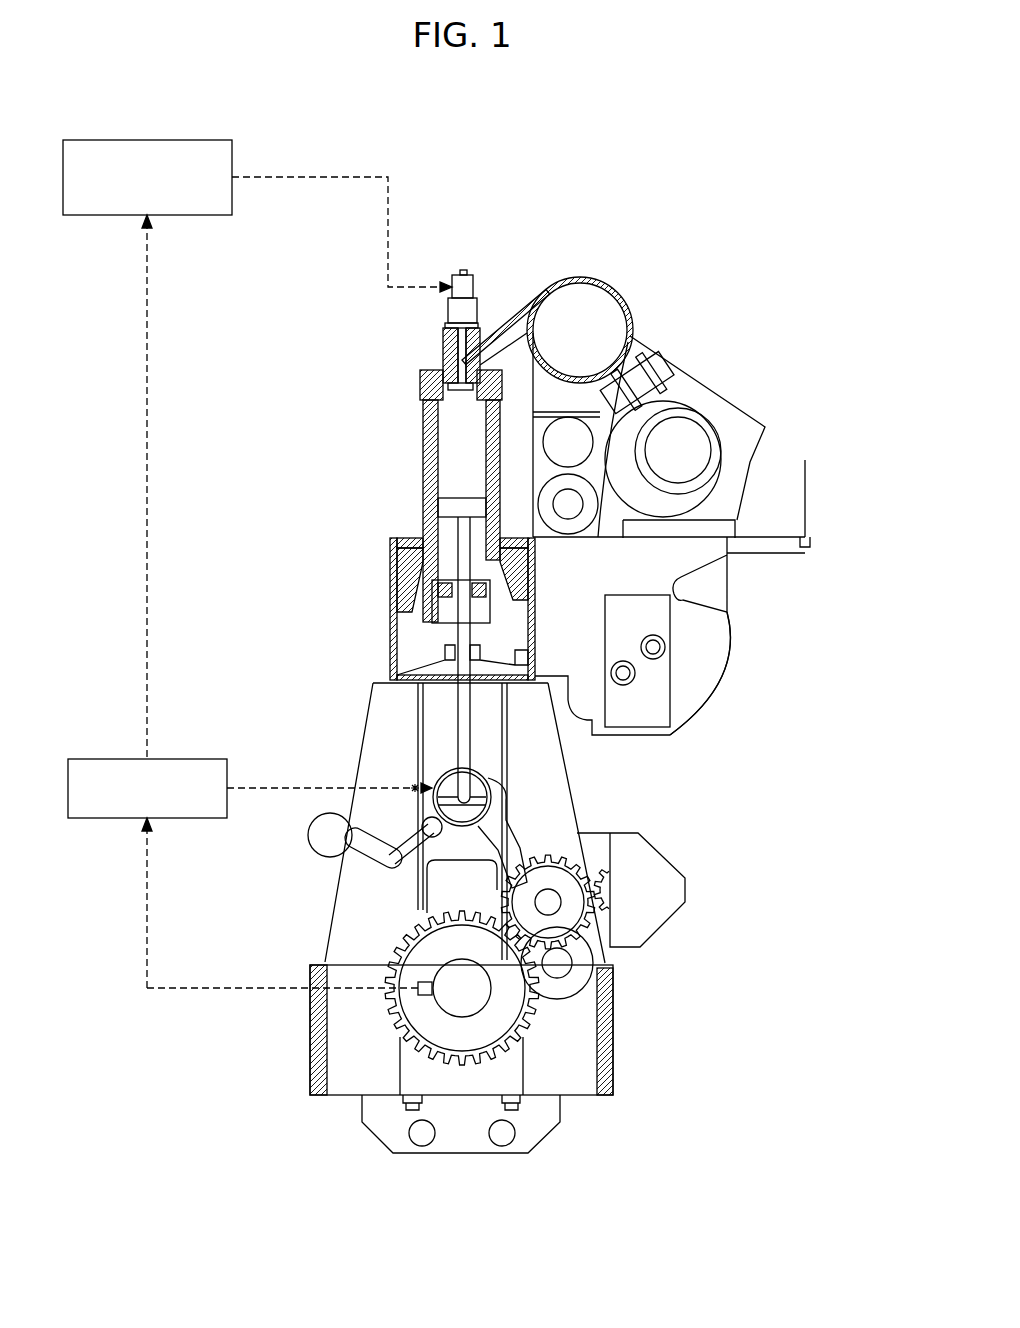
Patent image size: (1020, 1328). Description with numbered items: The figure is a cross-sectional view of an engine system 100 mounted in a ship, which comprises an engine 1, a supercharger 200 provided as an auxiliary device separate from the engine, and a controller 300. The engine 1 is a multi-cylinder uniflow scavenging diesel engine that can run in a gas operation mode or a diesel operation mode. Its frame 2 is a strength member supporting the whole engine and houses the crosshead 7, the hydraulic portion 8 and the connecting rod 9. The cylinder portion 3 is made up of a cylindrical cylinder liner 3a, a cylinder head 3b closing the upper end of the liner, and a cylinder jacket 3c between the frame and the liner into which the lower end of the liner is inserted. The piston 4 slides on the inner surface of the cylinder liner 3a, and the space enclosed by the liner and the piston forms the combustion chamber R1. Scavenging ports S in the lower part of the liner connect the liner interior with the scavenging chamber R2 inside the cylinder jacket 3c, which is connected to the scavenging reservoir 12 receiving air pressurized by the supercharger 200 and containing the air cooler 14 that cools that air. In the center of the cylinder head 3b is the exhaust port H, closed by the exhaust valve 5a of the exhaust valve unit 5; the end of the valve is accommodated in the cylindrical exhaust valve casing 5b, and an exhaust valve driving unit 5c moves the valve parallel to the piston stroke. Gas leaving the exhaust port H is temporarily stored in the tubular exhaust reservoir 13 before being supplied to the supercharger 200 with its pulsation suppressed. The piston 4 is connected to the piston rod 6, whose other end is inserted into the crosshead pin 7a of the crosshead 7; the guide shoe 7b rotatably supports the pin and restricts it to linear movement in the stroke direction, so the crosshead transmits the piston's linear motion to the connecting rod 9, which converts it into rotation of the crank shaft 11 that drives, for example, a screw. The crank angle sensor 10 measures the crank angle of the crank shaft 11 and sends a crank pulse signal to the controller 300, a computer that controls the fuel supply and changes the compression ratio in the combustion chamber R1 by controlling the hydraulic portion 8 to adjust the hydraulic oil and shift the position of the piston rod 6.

The engine system 100 is at (746, 168).
The engine 1 is at (372, 325).
The frame 2 is at (372, 692).
The cylinder portion 3 is at (398, 431).
The cylinder liner 3a is at (427, 465).
The cylinder head 3b is at (420, 388).
The cylinder jacket 3c is at (400, 602).
The piston 4 is at (440, 507).
The exhaust valve unit 5 is at (475, 291).
The exhaust valve 5a is at (470, 382).
The exhaust valve casing 5b is at (450, 282).
The exhaust valve driving unit 5c is at (99, 140).
The piston rod 6 is at (482, 746).
The crosshead 7 is at (376, 765).
The crosshead pin 7a is at (448, 765).
The guide shoe 7b is at (427, 806).
The hydraulic portion 8 is at (451, 812).
The connecting rod 9 is at (488, 825).
The crank angle sensor 10 is at (428, 990).
The crank shaft 11 is at (443, 1003).
The scavenging reservoir 12 is at (713, 663).
The exhaust reservoir 13 is at (608, 307).
The air cooler 14 is at (672, 698).
The supercharger 200 is at (742, 416).
The controller 300 is at (103, 759).
The exhaust port H is at (447, 368).
The combustion chamber R1 is at (475, 438).
The scavenging chamber R2 is at (405, 640).
The scavenging ports S is at (435, 597).